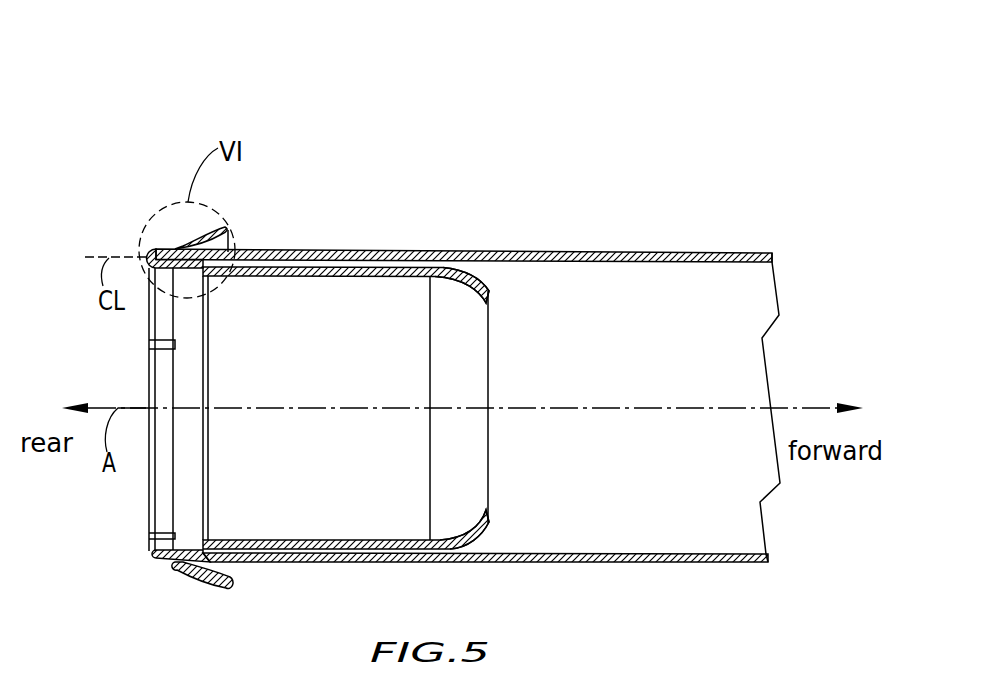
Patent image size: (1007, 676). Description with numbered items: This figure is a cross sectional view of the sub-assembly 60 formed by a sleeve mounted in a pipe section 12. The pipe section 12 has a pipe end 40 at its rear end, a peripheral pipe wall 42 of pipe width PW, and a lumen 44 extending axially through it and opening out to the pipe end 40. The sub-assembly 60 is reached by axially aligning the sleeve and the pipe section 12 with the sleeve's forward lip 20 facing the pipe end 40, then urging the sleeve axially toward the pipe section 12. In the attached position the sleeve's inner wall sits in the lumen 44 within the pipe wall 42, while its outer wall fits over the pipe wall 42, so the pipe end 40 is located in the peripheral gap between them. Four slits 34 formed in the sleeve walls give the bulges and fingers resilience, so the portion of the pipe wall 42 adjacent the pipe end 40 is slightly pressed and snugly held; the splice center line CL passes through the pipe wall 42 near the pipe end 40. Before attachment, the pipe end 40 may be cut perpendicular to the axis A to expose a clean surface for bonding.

The pipe section 12 is at (660, 238).
The lip 20 is at (489, 293).
The slits 34 is at (123, 344).
The pipe end 40 is at (153, 250).
The pipe wall 42 is at (449, 254).
The lumen 44 is at (748, 363).
The sub-assembly 60 is at (162, 163).